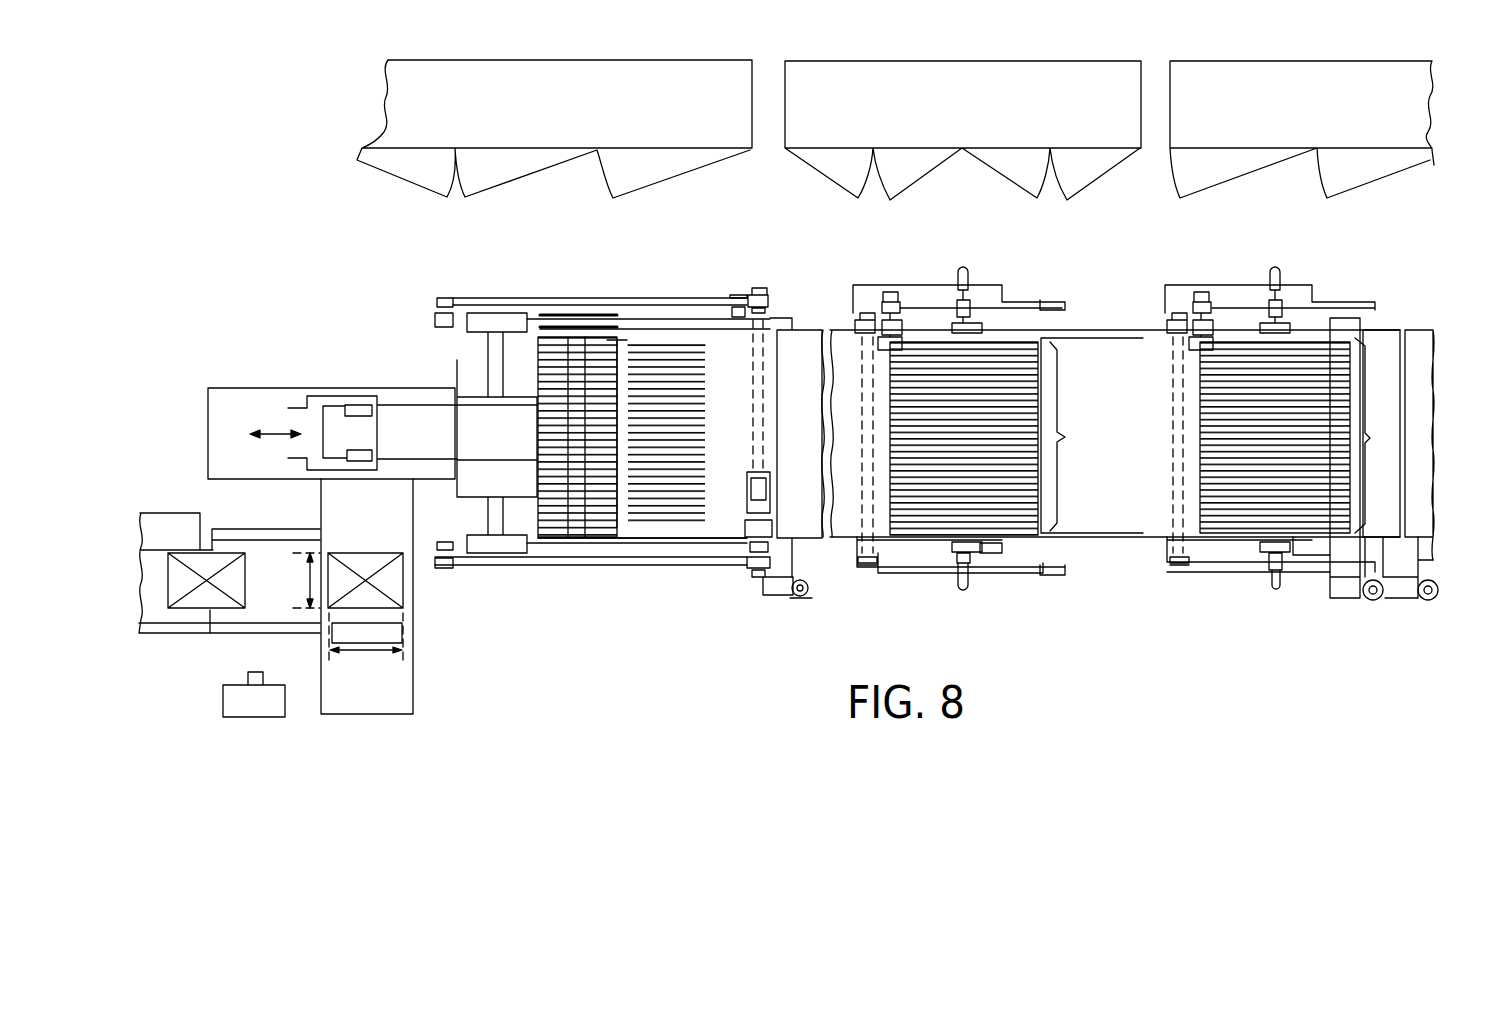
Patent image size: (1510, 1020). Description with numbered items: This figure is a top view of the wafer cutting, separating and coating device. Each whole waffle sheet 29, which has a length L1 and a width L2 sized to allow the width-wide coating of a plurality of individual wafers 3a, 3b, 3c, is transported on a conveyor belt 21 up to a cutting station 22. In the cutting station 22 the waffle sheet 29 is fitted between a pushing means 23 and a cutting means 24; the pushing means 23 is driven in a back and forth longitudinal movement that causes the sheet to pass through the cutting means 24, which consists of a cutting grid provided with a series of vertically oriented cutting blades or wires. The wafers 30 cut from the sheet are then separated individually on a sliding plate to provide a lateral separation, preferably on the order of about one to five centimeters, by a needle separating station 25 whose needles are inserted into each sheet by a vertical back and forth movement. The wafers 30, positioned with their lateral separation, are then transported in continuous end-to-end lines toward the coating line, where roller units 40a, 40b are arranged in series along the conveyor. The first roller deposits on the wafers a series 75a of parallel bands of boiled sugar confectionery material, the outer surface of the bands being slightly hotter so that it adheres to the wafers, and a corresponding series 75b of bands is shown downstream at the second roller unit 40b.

The conveyor belt 21 is at (422, 678).
The cutting station 22 is at (380, 372).
The pushing means 23 is at (344, 432).
The cutting means 24 is at (462, 368).
The needle separating station 25 is at (569, 290).
The waffle sheet 29 is at (427, 490).
The wafers 30 is at (710, 528).
The individual wafer 3a is at (702, 345).
The individual wafer 3b is at (708, 355).
The individual wafer 3c is at (712, 360).
The first conveyor roller unit 40a is at (919, 552).
The second conveyor roller unit 40b is at (1242, 552).
The series of parallel bands 75a is at (1092, 435).
The second gluing section 75b is at (1372, 438).